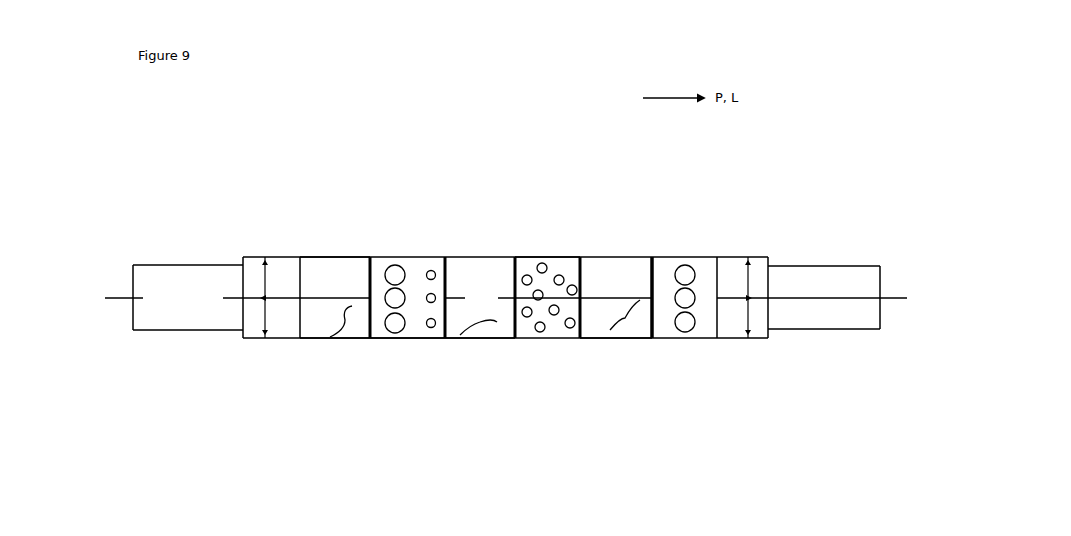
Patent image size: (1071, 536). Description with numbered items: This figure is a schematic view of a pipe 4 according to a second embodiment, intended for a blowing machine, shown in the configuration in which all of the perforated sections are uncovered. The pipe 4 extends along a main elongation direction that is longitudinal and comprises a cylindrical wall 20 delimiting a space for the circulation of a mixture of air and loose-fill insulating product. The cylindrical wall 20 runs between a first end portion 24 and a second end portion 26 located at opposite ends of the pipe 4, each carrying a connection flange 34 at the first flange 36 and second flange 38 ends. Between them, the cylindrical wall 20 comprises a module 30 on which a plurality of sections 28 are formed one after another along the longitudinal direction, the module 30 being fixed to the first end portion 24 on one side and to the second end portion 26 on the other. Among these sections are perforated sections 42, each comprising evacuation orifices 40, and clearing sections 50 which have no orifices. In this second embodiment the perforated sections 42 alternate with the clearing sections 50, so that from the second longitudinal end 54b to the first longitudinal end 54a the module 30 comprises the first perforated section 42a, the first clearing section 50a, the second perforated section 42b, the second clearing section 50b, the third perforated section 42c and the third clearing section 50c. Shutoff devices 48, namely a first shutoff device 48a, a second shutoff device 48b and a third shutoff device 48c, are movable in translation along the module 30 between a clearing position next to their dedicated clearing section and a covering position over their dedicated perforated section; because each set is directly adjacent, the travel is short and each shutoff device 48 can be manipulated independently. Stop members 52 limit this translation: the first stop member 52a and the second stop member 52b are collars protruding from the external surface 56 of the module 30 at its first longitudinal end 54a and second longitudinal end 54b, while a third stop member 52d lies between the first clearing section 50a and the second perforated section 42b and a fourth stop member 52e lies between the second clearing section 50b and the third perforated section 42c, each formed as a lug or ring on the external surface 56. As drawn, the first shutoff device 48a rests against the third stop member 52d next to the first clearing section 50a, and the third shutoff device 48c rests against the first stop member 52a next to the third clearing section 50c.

The pipe 4 is at (404, 206).
The cylindrical wall 20 is at (792, 260).
The first end portion 24 is at (200, 312).
The second end portion 26 is at (805, 322).
The sections 28 is at (658, 262).
The module 30 is at (553, 257).
The connection flange 34 is at (485, 296).
The inlet flange 36 is at (133, 313).
The outlet flange 38 is at (878, 272).
The evacuation orifice 40 is at (405, 320).
The perforated sections 42 is at (568, 289).
The first perforated section 42a is at (700, 257).
The second perforated section 42b is at (562, 340).
The third perforated section 42c is at (418, 257).
The shutoff devices 48 is at (480, 277).
The first shutoff device 48a is at (615, 257).
The second shutoff device 48b is at (510, 300).
The third shutoff device 48c is at (343, 257).
The clearing sections 50 is at (511, 373).
The first clearing section 50a is at (610, 330).
The second clearing section 50b is at (497, 322).
The third clearing section 50c is at (330, 337).
The stop members 52 is at (496, 295).
The first stop member 52a is at (273, 257).
The second stop member 52b is at (740, 322).
The third stop member 52d is at (585, 257).
The fourth stop member 52e is at (468, 257).
The first longitudinal end 54a is at (264, 357).
The second longitudinal end 54b is at (757, 245).
The external surface 56 is at (385, 338).